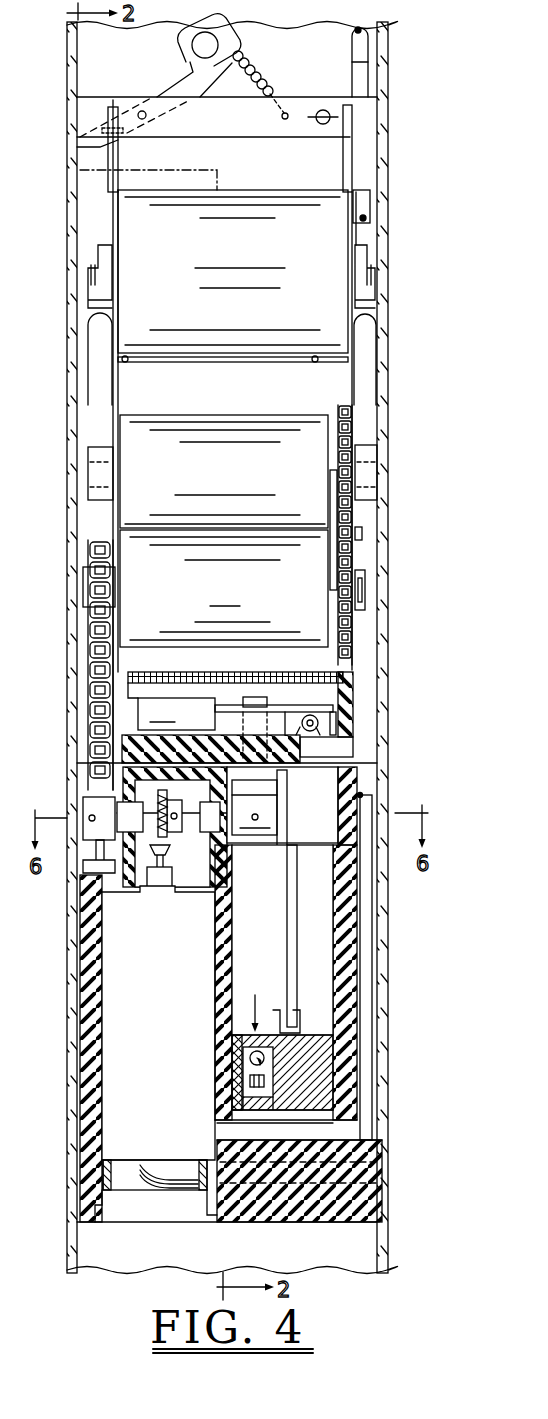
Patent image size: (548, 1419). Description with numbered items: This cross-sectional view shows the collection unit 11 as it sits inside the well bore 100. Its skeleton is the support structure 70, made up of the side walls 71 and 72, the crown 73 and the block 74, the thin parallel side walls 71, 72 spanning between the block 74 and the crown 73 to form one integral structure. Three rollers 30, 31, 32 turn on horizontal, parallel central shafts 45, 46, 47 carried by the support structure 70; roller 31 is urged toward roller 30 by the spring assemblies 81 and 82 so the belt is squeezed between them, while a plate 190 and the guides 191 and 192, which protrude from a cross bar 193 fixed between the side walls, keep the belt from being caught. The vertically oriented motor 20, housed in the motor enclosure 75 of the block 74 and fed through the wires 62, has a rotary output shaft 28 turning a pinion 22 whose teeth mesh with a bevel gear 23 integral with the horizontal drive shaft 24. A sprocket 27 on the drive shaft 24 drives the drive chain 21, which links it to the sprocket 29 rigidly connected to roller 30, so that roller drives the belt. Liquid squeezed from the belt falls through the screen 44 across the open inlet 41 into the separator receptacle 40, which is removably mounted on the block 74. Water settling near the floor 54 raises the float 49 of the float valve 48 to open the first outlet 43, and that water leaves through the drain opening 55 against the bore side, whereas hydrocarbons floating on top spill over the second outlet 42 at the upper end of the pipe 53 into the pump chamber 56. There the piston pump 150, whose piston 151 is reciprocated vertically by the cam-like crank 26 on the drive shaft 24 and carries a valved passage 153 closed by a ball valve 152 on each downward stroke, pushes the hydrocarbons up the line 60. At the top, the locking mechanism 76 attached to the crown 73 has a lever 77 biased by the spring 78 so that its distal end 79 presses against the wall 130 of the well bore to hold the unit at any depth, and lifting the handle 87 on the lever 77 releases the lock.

The collection unit 11 is at (405, 1118).
The motor 20 is at (158, 1023).
The drive chain 21 is at (90, 683).
The pinion 22 is at (167, 860).
The bevel gear 23 is at (168, 838).
The drive shaft 24 is at (197, 810).
The cam-like crank 26 is at (288, 797).
The sprocket 27 is at (95, 797).
The rotary output shaft 28 is at (158, 887).
The sprocket 29 is at (97, 548).
The roller 30 is at (224, 588).
The roller 31 is at (224, 471).
The roller 32 is at (233, 271).
The separator receptacle 40 is at (352, 705).
The inlet 41 is at (212, 672).
The second outlet 42 is at (250, 705).
The first outlet 43 is at (288, 718).
The screen 44 is at (344, 678).
The central shaft 45 is at (366, 578).
The central shaft 46 is at (371, 482).
The central shaft 47 is at (374, 273).
The float valve 48 is at (313, 716).
The float 49 is at (166, 676).
The pipe 53 is at (243, 720).
The floor 54 is at (128, 720).
The drain opening 55 is at (356, 748).
The pump chamber 56 is at (282, 940).
The line 60 is at (374, 795).
The wires 62 is at (166, 1170).
The support structure 70 is at (366, 222).
The side wall 71 is at (120, 151).
The side wall 72 is at (343, 153).
The crown 73 is at (370, 107).
The block 74 is at (78, 1088).
The motor enclosure 75 is at (95, 980).
The locking mechanism 76 is at (105, 69).
The lever 77 is at (178, 86).
The spring 78 is at (258, 69).
The distal end 79 is at (73, 143).
The spring assembly 81 is at (96, 357).
The spring assembly 82 is at (366, 350).
The handle 87 is at (192, 46).
The well bore 100 is at (227, 1238).
The wall 130 is at (70, 283).
The pump 150 is at (222, 1055).
The piston 151 is at (313, 1042).
The ball valve 152 is at (257, 1000).
The valved passage 153 is at (240, 1110).
The plate 190 is at (338, 470).
The guide 191 is at (126, 363).
The guide 192 is at (312, 364).
The support bar 193 is at (215, 368).